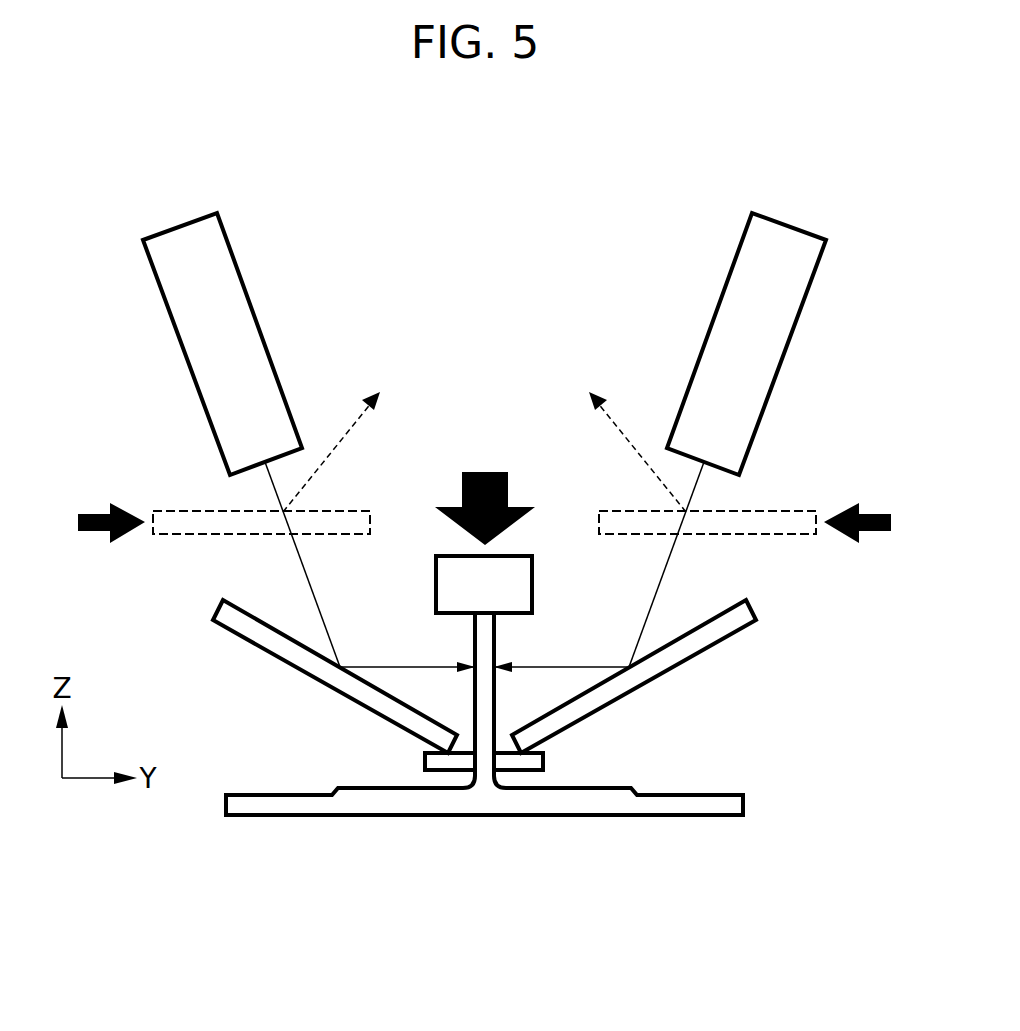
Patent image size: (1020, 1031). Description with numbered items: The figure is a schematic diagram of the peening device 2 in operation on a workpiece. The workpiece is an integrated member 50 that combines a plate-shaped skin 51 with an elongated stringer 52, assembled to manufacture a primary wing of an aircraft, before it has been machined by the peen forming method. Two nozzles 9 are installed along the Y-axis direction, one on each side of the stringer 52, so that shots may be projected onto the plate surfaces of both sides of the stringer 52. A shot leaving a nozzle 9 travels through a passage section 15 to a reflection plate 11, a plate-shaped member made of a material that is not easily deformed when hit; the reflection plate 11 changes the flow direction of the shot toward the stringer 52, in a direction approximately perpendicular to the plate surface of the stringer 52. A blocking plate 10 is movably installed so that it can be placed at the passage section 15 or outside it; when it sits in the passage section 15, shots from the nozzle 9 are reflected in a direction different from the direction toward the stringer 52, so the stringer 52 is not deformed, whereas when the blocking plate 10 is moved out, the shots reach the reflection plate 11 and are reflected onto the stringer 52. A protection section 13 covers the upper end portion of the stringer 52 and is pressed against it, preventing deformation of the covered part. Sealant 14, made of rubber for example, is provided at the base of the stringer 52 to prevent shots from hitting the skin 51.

The peening device 2 is at (630, 194).
The nozzle 9 is at (245, 287).
The blocking plate 10 is at (175, 534).
The reflection plate 11 is at (263, 648).
The protection section 13 is at (532, 580).
The sealant 14 is at (445, 770).
The passage section 15 is at (327, 579).
The integrated member 50 is at (742, 762).
The skin 51 is at (695, 815).
The stringer 52 is at (494, 635).